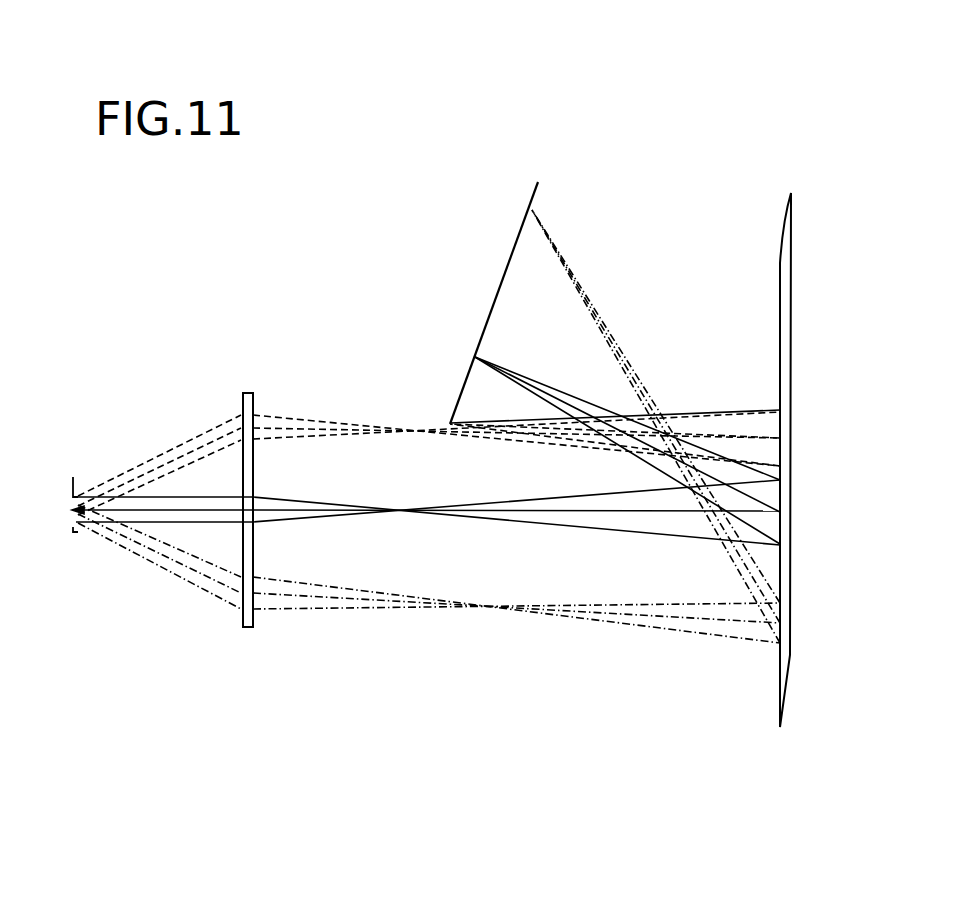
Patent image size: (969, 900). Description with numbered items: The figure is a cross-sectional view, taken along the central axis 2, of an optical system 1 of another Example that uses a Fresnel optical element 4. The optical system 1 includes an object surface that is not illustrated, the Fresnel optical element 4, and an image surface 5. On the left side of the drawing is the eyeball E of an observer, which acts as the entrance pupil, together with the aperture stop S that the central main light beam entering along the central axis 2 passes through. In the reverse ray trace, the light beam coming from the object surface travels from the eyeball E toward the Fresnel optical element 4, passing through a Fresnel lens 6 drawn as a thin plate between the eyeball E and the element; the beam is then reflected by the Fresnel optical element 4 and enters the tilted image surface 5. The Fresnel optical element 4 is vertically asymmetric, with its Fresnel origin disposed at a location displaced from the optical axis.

The optical system 1 is at (742, 88).
The central axis 2 is at (57, 504).
The Fresnel optical element 4 is at (785, 688).
The image surface 5 is at (510, 255).
The Fresnel lens 6 is at (253, 627).
The eyeball E is at (70, 520).
The aperture stop S is at (78, 531).